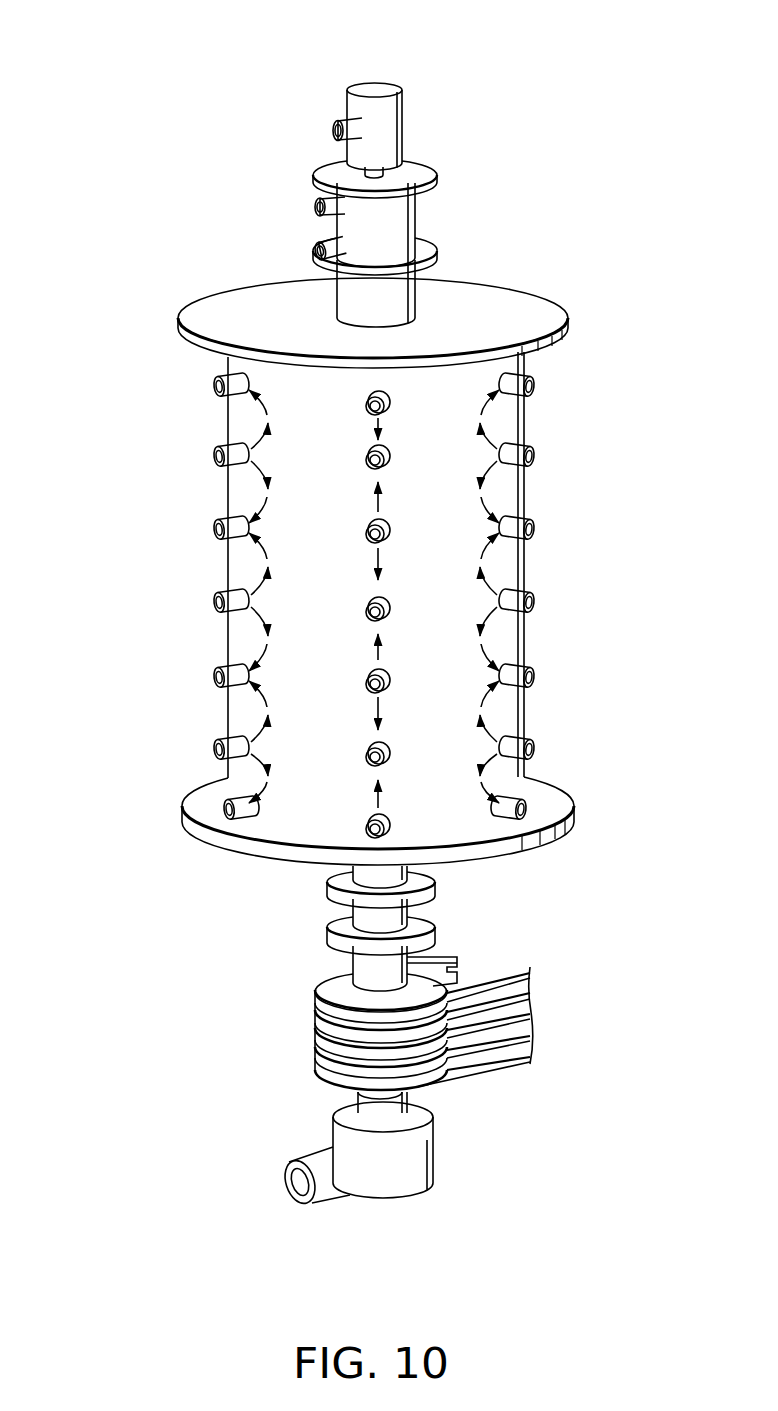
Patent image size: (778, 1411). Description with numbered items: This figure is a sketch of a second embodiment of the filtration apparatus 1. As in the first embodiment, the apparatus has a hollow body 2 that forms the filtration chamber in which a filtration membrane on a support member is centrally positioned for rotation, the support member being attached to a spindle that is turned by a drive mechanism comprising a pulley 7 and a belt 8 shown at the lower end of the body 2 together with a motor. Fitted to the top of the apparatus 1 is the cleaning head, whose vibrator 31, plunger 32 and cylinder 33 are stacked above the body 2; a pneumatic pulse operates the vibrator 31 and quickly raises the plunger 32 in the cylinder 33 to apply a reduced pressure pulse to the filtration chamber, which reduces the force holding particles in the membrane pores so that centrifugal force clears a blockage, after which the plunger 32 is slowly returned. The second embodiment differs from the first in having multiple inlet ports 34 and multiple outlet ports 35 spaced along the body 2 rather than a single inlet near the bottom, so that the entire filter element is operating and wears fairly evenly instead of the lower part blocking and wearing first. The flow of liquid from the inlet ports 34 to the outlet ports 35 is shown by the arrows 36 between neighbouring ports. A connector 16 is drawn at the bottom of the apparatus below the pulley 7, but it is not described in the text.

The filtration apparatus 1 is at (612, 98).
The hollow body 2 is at (523, 362).
The pulley 7 is at (338, 985).
The belt 8 is at (470, 1057).
The outlet connector 16 is at (403, 1178).
The vibrator 31 is at (383, 130).
The plunger 32 is at (393, 232).
The cylinder 33 is at (393, 300).
The inlet ports 34 is at (200, 465).
The outlet ports 35 is at (203, 393).
The arrows 36 is at (374, 596).